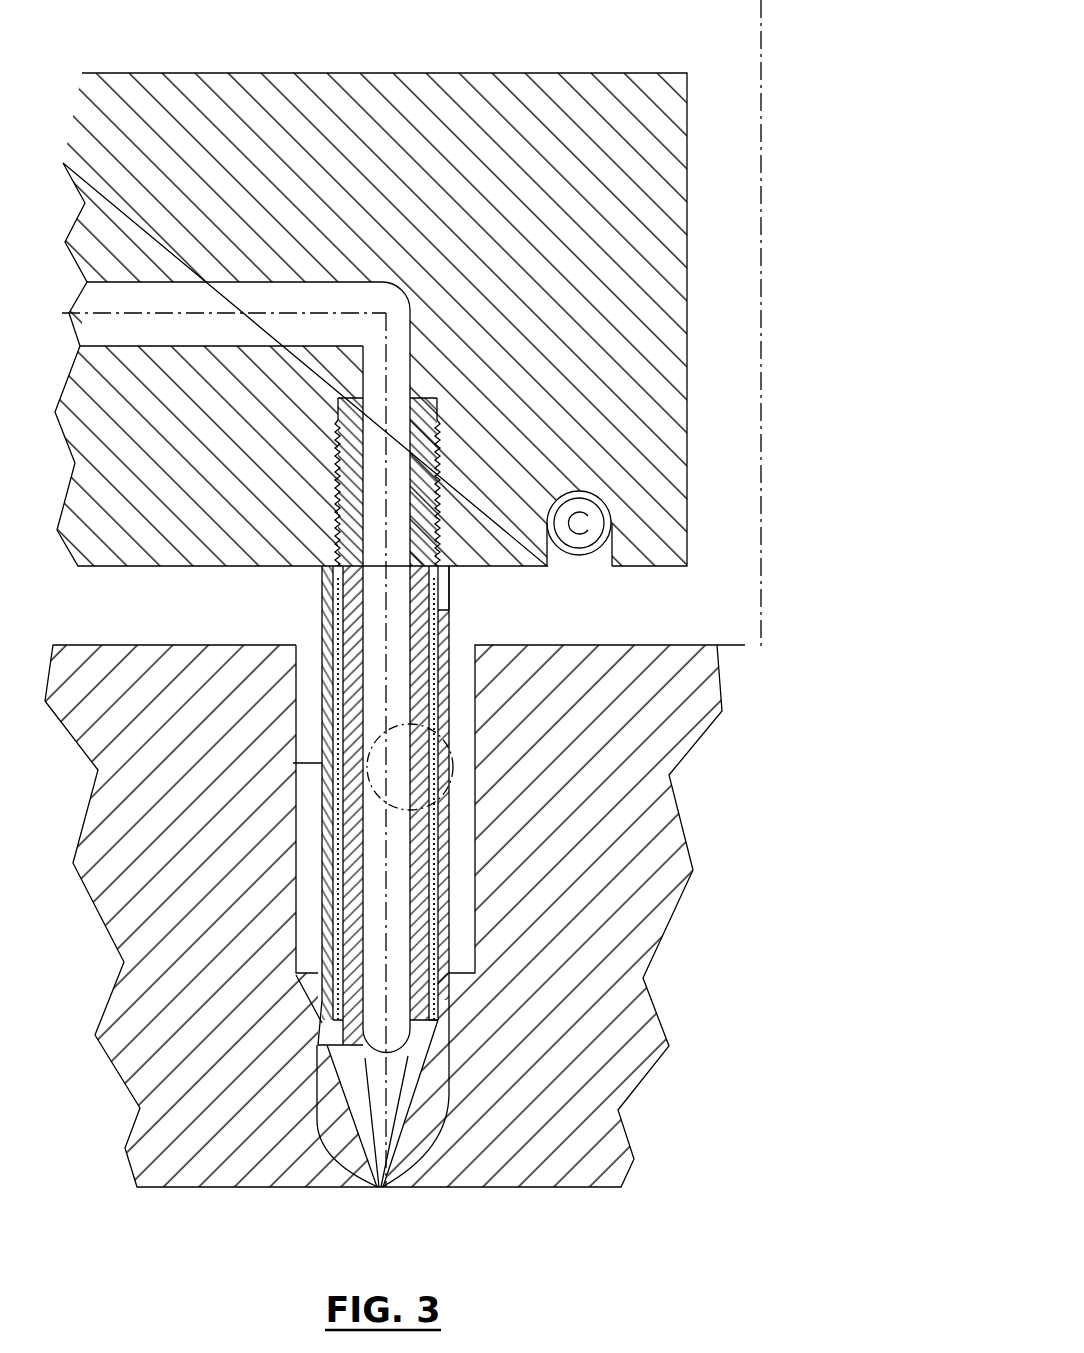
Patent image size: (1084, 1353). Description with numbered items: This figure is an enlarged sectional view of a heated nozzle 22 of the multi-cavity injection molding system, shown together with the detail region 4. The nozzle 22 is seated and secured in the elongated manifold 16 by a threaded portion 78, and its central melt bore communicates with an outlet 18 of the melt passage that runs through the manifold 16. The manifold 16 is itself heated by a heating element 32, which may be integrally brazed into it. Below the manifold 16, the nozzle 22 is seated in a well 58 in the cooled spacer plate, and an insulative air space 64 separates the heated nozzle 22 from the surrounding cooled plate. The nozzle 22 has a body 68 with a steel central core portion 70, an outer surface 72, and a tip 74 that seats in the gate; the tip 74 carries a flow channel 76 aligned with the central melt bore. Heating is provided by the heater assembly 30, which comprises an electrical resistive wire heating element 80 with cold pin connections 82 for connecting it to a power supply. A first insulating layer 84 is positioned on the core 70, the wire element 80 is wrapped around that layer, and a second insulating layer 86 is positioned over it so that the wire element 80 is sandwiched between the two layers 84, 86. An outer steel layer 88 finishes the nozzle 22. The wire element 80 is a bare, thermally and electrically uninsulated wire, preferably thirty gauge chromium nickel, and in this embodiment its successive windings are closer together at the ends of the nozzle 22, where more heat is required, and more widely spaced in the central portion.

The nozzle assembly detail 4 is at (292, 763).
The manifold 16 is at (660, 420).
The outlet 18 is at (262, 313).
The nozzle 22 is at (458, 700).
The heater assembly 30 is at (333, 874).
The heating element 32 is at (604, 526).
The well 58 is at (468, 728).
The insulative air space 64 is at (458, 793).
The body 68 is at (418, 838).
The central core portion 70 is at (428, 870).
The outer surface 72 is at (432, 900).
The tip 74 is at (415, 1067).
The flow channel 76 is at (352, 1090).
The threaded portion 78 is at (443, 458).
The wire heating element 80 is at (438, 934).
The cold pin connections 82 is at (433, 584).
The first insulating layer 84 is at (440, 961).
The second insulating layer 86 is at (441, 978).
The outer steel layer 88 is at (443, 1000).